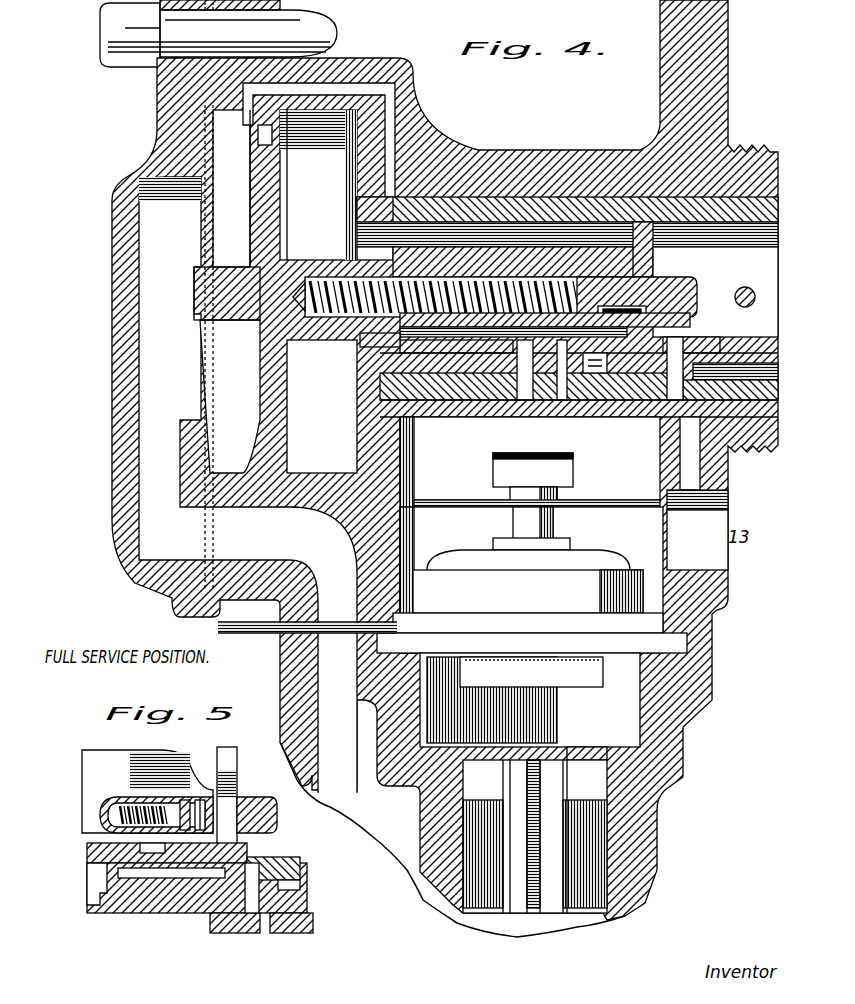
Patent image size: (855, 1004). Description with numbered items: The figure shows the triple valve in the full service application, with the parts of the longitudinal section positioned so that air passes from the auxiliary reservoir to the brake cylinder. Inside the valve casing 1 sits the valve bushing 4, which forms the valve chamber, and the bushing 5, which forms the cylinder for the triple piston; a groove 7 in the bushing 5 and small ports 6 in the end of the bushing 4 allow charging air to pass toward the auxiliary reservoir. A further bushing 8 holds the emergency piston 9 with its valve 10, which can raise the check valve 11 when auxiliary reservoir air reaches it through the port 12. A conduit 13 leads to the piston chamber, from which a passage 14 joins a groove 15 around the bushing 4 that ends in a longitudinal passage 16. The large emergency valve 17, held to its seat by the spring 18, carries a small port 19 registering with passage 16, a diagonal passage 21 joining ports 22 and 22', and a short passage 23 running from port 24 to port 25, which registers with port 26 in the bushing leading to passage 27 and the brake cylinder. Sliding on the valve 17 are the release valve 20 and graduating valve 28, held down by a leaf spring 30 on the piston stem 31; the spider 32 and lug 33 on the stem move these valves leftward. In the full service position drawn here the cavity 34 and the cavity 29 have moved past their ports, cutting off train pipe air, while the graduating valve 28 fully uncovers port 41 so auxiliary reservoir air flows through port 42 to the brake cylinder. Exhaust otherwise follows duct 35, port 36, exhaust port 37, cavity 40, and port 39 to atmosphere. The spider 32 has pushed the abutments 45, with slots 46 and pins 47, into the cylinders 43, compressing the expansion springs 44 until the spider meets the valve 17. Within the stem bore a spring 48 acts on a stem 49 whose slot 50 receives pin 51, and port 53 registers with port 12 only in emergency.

In FIG. 4, the valve casing 1 is at (562, 165).
In FIG. 4, the valve bushing 4 is at (412, 205).
In FIG. 4, the bushing 5 is at (330, 420).
In FIG. 4, the small ports 6 is at (357, 211).
In FIG. 4, the groove 7 is at (345, 100).
In FIG. 4, the bushing 8 is at (420, 505).
In FIG. 4, the emergency piston 9 is at (488, 447).
In FIG. 4, the valve 10 is at (590, 580).
In FIG. 4, the check valve 11 is at (585, 780).
In FIG. 4, the port 12 is at (562, 400).
In FIG. 4, the conduit 13 is at (248, 485).
In FIG. 4, the passage 14 is at (392, 80).
In FIG. 4, the groove 15 is at (516, 258).
In FIG. 4, the passage 16 is at (360, 388).
In FIG. 5, the passage 16 is at (95, 900).
In FIG. 4, the emergency valve 17 is at (720, 370).
In FIG. 4, the spring 18 is at (478, 230).
In FIG. 4, the small port 19 is at (456, 344).
In FIG. 5, the small port 19 is at (92, 880).
In FIG. 5, the release valve 20 is at (120, 850).
In FIG. 5, the diagonal passage 21 is at (145, 913).
In FIG. 4, the port 22 is at (526, 423).
In FIG. 5, the port 22 is at (87, 932).
In FIG. 4, the port 22' is at (633, 440).
In FIG. 5, the port 22' is at (205, 934).
In FIG. 5, the short passage 23 is at (275, 858).
In FIG. 4, the port 24 is at (791, 332).
In FIG. 5, the port 24 is at (250, 855).
In FIG. 4, the port 25 is at (772, 366).
In FIG. 4, the port 26 is at (770, 388).
In FIG. 5, the port 26 is at (300, 888).
In FIG. 4, the passage 27 is at (700, 478).
In FIG. 5, the passage 27 is at (280, 933).
In FIG. 4, the graduating valve 28 is at (700, 340).
In FIG. 4, the cavity 29 is at (660, 335).
In FIG. 5, the cavity 29 is at (185, 913).
In FIG. 4, the leaf spring 30 is at (560, 250).
In FIG. 4, the piston stem 31 is at (660, 247).
In FIG. 4, the spider 32 is at (644, 279).
In FIG. 5, the spider 32 is at (230, 760).
In FIG. 4, the lug 33 is at (751, 252).
In FIG. 5, the small cavity 34 is at (88, 862).
In FIG. 4, the longitudinal duct 35 is at (690, 417).
In FIG. 5, the longitudinal duct 35 is at (258, 935).
In FIG. 4, the port 36 is at (590, 375).
In FIG. 4, the exhaust port 37 is at (520, 430).
In FIG. 4, the port 39 is at (490, 400).
In FIG. 4, the cavity 40 is at (434, 343).
In FIG. 5, the cavity 40 is at (92, 855).
In FIG. 5, the port 41 is at (300, 868).
In FIG. 5, the port 42 is at (250, 930).
In FIG. 5, the cylinders 43 is at (105, 808).
In FIG. 5, the expansion springs 44 is at (135, 800).
In FIG. 5, the abutments 45 is at (185, 800).
In FIG. 5, the slots 46 is at (200, 800).
In FIG. 5, the pins 47 is at (240, 812).
In FIG. 4, the spring 48 is at (478, 300).
In FIG. 4, the stem 49 is at (740, 290).
In FIG. 5, the stem 49 is at (265, 797).
In FIG. 4, the slot 50 is at (643, 235).
In FIG. 4, the pin 51 is at (620, 300).
In FIG. 4, the port 53 is at (595, 410).